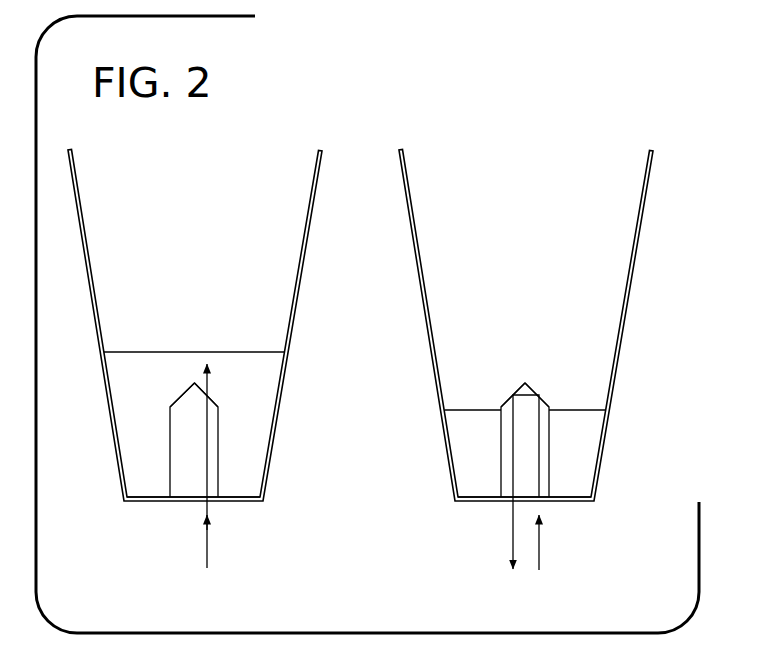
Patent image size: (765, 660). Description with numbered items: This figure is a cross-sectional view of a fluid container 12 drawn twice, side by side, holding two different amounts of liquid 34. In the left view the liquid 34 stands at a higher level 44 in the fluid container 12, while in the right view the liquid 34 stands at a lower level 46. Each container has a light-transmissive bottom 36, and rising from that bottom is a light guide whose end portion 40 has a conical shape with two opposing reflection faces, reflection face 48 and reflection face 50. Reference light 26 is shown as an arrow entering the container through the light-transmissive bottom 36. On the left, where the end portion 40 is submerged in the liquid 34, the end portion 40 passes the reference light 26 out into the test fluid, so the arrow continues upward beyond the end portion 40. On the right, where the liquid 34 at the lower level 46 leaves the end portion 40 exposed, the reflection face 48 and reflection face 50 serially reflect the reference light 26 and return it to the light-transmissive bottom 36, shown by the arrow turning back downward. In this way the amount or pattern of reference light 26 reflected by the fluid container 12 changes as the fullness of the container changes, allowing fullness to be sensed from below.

The fluid container 12 is at (68, 149).
The reference light 26 is at (211, 545).
The liquid 34 is at (131, 350).
The light-transmissive bottom 36 is at (170, 505).
The end portion 40 is at (192, 403).
The higher level 44 is at (302, 353).
The lower level 46 is at (632, 410).
The reflection face 48 is at (213, 398).
The reflection face 50 is at (183, 391).